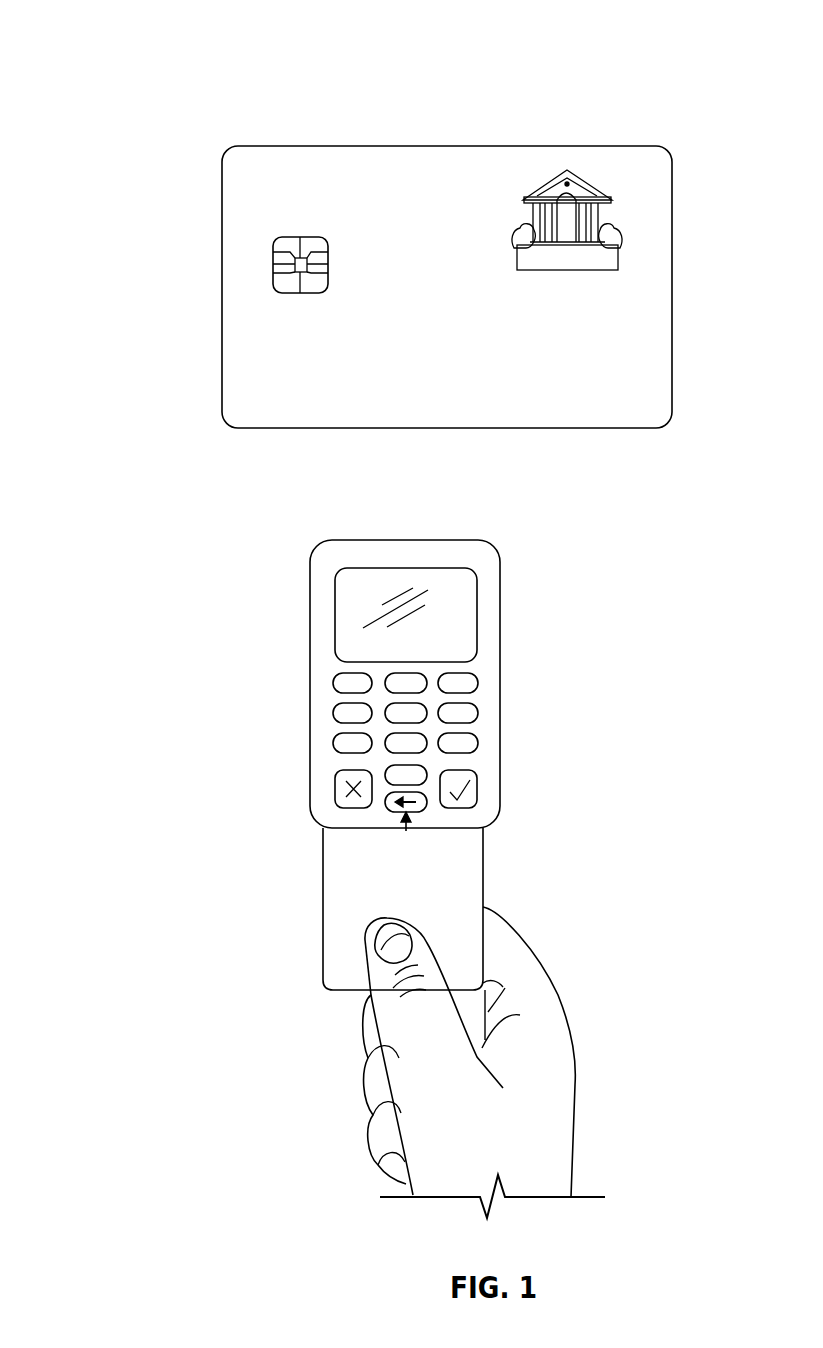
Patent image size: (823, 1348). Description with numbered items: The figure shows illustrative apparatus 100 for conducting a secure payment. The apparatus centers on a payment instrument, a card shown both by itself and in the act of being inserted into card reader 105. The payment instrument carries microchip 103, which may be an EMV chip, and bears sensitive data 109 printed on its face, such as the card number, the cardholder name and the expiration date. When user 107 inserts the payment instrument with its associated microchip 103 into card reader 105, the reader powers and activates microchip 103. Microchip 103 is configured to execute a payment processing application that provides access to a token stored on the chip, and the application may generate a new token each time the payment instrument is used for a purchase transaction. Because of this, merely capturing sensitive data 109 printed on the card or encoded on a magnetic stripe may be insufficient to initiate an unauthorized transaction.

The apparatus 100 is at (122, 50).
The microchip 103 is at (273, 264).
The card reader 105 is at (500, 683).
The user 107 is at (572, 1050).
The sensitive data 109 is at (692, 337).